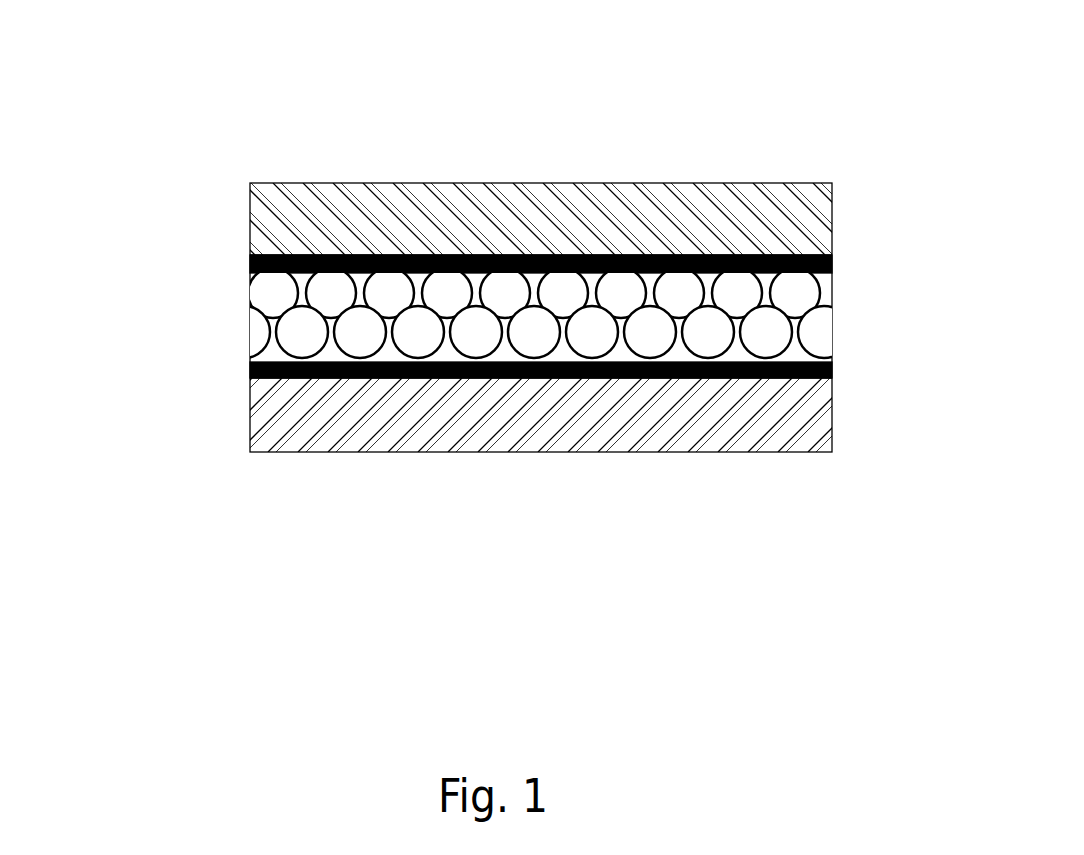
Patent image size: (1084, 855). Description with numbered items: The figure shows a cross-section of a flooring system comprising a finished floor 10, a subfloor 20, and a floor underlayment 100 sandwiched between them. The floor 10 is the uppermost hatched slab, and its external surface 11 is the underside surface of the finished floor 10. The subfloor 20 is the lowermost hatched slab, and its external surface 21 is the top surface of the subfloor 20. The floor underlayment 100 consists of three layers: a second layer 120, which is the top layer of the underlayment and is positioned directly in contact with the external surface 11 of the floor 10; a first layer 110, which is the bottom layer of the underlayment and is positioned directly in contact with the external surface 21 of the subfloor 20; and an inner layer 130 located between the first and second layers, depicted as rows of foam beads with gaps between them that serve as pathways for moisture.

The floor underlayment 100 is at (118, 296).
The floor 10 is at (387, 200).
The external surface of the floor 11 is at (306, 264).
The subfloor 20 is at (533, 433).
The external surface of the subfloor 21 is at (277, 362).
The first layer 110 is at (826, 380).
The second layer 120 is at (814, 258).
The inner layer 130 is at (817, 323).